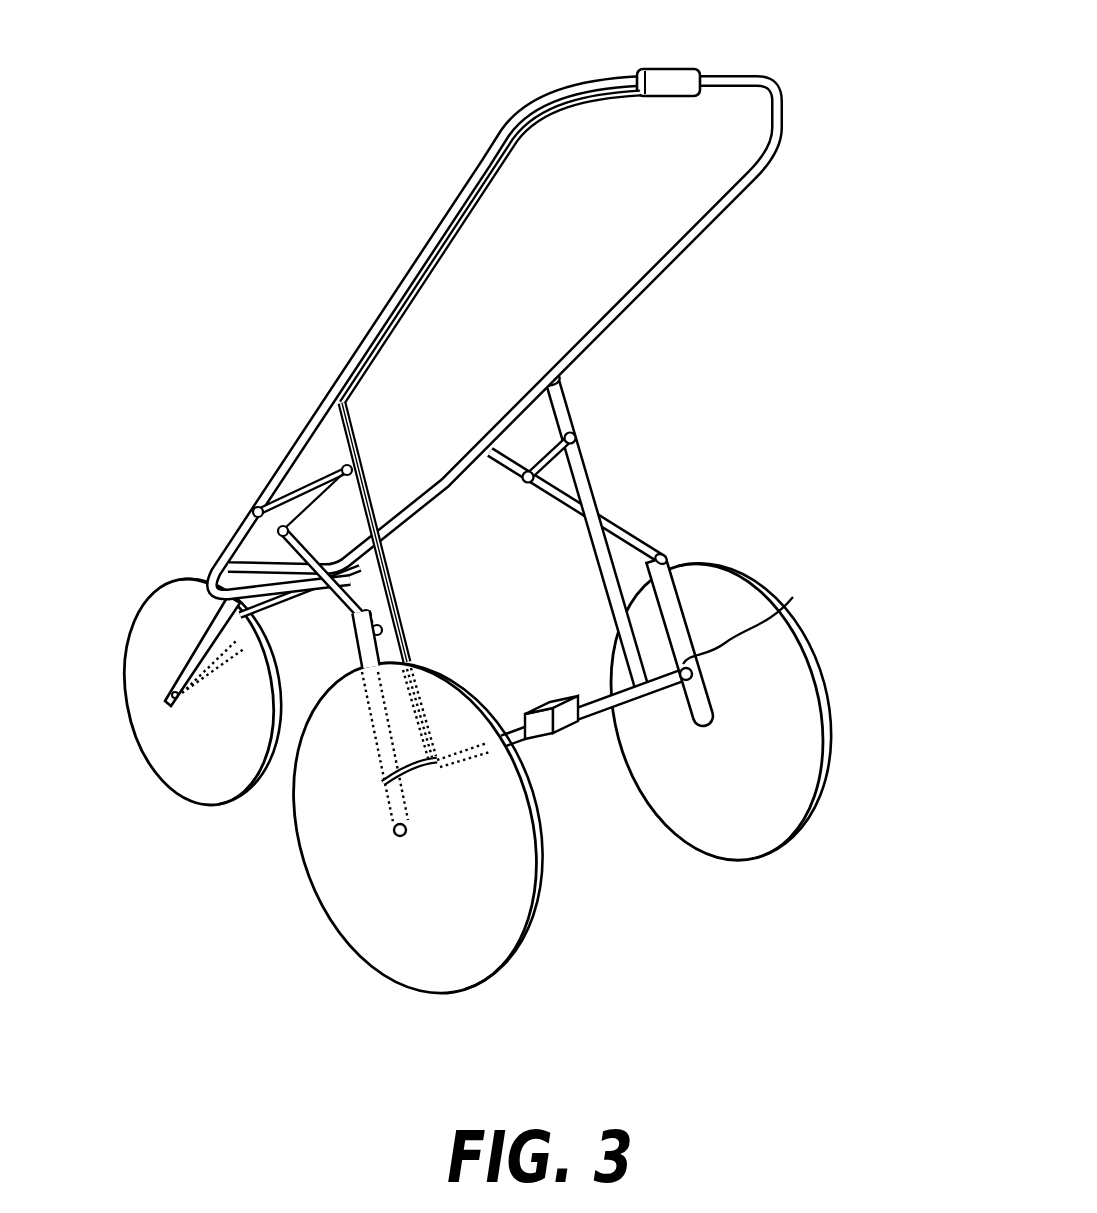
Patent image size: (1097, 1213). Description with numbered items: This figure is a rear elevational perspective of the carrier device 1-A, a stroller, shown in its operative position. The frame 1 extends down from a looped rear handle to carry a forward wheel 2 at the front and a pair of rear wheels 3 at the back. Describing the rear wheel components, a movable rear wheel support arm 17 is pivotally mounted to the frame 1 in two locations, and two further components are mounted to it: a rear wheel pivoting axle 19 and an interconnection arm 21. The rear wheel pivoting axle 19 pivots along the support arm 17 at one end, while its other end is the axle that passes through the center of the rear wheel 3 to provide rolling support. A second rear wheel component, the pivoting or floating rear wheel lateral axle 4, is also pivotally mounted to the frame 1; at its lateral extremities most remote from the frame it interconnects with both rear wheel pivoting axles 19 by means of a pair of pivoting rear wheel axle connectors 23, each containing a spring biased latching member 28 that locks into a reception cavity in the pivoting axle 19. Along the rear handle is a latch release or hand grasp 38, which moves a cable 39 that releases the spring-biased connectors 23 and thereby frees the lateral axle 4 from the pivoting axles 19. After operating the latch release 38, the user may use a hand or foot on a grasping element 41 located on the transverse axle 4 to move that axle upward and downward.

The frame 1 is at (543, 93).
The carrier device 1-A is at (272, 248).
The forward wheel 2 is at (150, 738).
The rear wheel 3 is at (827, 718).
The pivoting rear wheel lateral axle 4 is at (583, 478).
The movable rear wheel support arm 17 is at (613, 530).
The rear wheel pivoting axle 19 is at (663, 603).
The interconnection arm 21 is at (547, 460).
The pivoting rear wheel axle connector 23 is at (690, 677).
The spring biased latching member 28 is at (752, 614).
The latch release 38 is at (657, 80).
The cable 39 is at (447, 222).
The hand/foot grasping element 41 is at (556, 690).